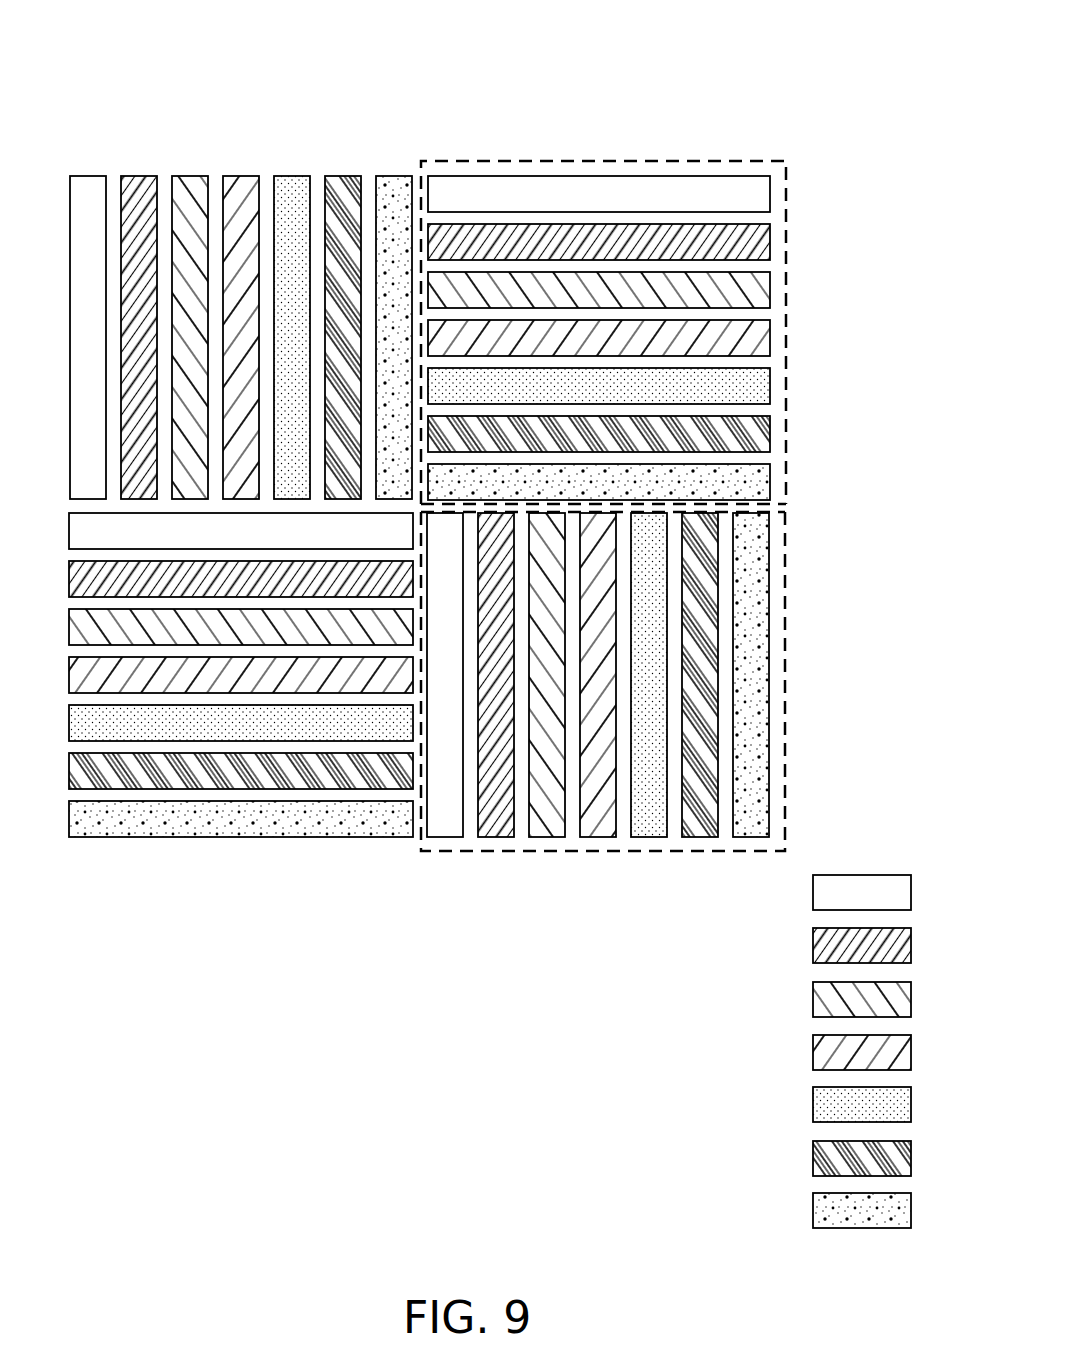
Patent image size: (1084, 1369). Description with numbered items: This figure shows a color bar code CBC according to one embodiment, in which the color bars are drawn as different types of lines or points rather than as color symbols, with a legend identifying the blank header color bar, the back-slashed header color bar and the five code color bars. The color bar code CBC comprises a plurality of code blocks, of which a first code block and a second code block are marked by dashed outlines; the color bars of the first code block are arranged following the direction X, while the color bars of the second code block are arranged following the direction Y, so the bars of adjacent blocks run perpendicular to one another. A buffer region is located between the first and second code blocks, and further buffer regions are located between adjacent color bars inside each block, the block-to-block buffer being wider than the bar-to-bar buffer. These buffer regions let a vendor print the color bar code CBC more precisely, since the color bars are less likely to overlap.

The color bar code CBC is at (734, 92).